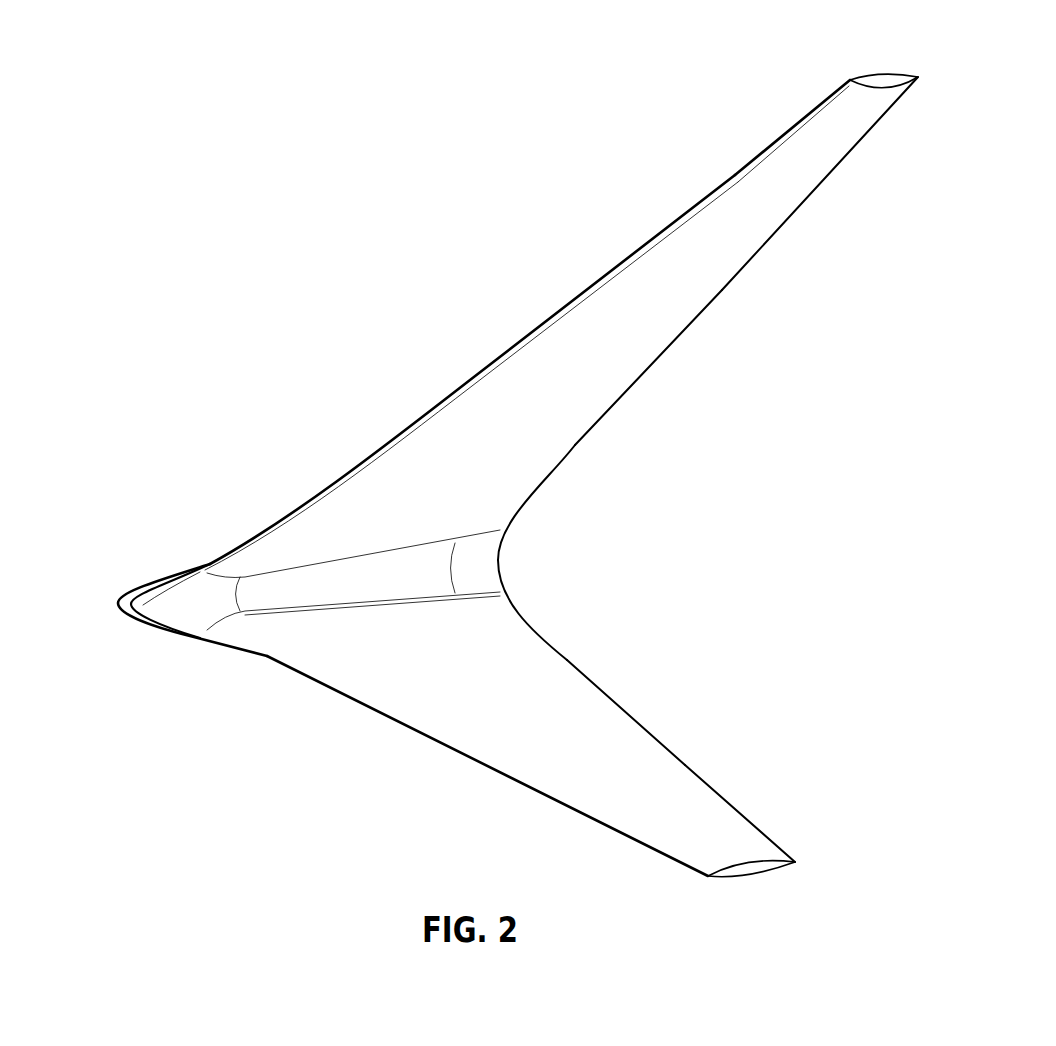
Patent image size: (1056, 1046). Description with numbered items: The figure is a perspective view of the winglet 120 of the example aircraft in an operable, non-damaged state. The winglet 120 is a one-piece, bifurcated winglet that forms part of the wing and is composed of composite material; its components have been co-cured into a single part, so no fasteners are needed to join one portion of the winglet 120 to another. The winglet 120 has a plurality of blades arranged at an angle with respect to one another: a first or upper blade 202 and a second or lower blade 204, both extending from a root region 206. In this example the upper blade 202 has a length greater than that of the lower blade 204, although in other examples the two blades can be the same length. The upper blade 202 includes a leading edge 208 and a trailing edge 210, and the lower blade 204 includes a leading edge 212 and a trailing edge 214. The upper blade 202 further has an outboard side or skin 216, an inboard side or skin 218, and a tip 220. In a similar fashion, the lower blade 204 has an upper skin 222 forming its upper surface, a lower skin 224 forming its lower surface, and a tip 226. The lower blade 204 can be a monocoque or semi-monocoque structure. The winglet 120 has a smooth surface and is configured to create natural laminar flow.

The winglet 120 is at (453, 370).
The upper blade 202 is at (652, 352).
The lower blade 204 is at (685, 770).
The root region 206 is at (153, 572).
The leading edge 208 is at (605, 272).
The trailing edge 210 is at (547, 468).
The leading edge 212 is at (560, 800).
The trailing edge 214 is at (622, 700).
The outboard skin 216 is at (712, 277).
The inboard skin 218 is at (732, 177).
The tip 220 is at (872, 85).
The upper skin 222 is at (530, 638).
The lower skin 224 is at (710, 880).
The tip 226 is at (747, 870).